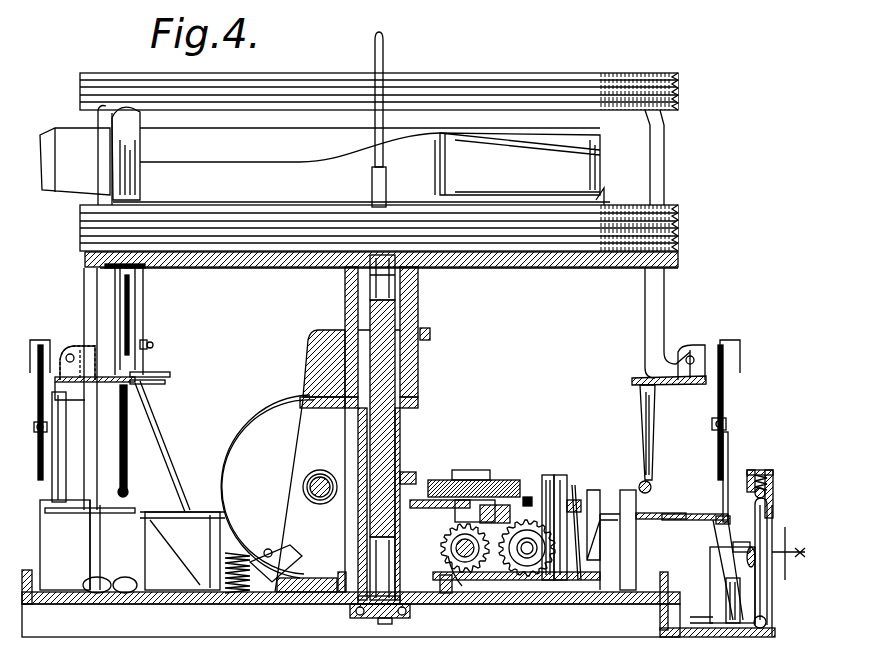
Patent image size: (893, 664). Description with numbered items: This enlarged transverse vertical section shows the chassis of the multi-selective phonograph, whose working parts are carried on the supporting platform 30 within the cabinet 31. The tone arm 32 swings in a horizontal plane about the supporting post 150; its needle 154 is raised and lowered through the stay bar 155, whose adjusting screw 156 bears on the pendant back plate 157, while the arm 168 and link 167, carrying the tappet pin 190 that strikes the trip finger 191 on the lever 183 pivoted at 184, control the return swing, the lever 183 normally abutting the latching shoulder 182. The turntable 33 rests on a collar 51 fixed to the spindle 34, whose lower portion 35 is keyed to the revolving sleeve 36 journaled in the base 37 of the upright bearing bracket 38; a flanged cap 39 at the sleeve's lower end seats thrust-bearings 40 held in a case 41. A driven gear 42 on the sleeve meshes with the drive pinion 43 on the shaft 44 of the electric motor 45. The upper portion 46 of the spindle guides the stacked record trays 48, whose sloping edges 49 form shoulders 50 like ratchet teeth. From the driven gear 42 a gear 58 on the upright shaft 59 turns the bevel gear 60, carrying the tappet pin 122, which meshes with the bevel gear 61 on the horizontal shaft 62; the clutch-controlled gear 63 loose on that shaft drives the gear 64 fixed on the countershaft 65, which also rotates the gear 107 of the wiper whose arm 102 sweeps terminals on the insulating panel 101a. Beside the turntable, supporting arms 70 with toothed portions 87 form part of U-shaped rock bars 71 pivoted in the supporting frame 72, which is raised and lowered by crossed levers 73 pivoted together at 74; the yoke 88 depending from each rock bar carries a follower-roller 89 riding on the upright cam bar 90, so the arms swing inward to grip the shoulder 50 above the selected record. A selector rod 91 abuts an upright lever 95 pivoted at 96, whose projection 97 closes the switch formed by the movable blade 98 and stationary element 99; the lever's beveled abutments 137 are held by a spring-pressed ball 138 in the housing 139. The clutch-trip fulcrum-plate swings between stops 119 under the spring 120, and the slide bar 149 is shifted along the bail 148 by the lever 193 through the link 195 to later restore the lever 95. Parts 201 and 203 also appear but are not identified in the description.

The supporting platform 30 is at (660, 606).
The cabinet 31 is at (351, 603).
The tone arm 32 is at (325, 165).
The turntable 33 is at (242, 266).
The upright spindle 34 is at (398, 266).
The lower portion of spindle 35 is at (398, 360).
The revolving sleeve 36 is at (418, 320).
The base of bearing bracket 37 is at (341, 576).
The upright bearing bracket 38 is at (305, 443).
The flanged cap 39 is at (412, 615).
The thrust-bearings 40 is at (350, 613).
The case 41 is at (386, 626).
The driven gear 42 is at (408, 472).
The drive pinion 43 is at (305, 490).
The motor shaft 44 is at (318, 497).
The electric motor 45 is at (268, 425).
The upper portion of spindle 46 is at (388, 186).
The record trays 48 is at (522, 82).
The sloping peripheral edges 49 is at (82, 213).
The shoulders 50 is at (85, 248).
The collar 51 is at (345, 288).
The gear 58 is at (474, 448).
The upright shaft 59 is at (476, 480).
The bevel gear 60 is at (462, 470).
The bevel gear 61 is at (470, 556).
The horizontal shaft 62 is at (452, 552).
The clutch-controlled gear 63 is at (488, 508).
The gear 64 is at (530, 556).
The countershaft 65 is at (552, 588).
The supporting arms 70 is at (98, 156).
The rock bar 71 is at (632, 381).
The supporting frame 72 is at (62, 348).
The crossed levers 73 is at (37, 395).
The pivot 74 is at (36, 432).
The toothed record-engaging portions 87 is at (134, 112).
The actuating yoke 88 is at (640, 424).
The follower-roller 89 is at (641, 482).
The cam bar 90 is at (120, 508).
The selector rods 91 is at (791, 553).
The selector lever 95 is at (768, 520).
The pivot 96 is at (767, 622).
The projection 97 is at (736, 522).
The movable switch blade 98 is at (733, 546).
The stationary switch element 99 is at (728, 580).
The insulating panel 101a is at (573, 497).
The wiper arm 102 is at (585, 492).
The gear 107 is at (526, 496).
The stops 119 is at (448, 594).
The spring 120 is at (462, 577).
The tappet pin 122 is at (447, 500).
The beveled abutments 137 is at (773, 502).
The spring-pressed ball 138 is at (766, 490).
The ball housing 139 is at (764, 470).
The bail 148 is at (728, 505).
The slide bar 149 is at (712, 571).
The tone arm post 150 is at (98, 566).
The reproducing needle 154 is at (600, 198).
The stay bar 155 is at (145, 288).
The adjusting screw 156 is at (153, 345).
The pendant back plate 157 is at (132, 314).
The link 167 is at (78, 447).
The arm 168 is at (75, 447).
The latching shoulder 182 is at (168, 373).
The horizontally-swinging lever 183 is at (168, 446).
The pivot 184 is at (218, 534).
The tappet pin 190 is at (65, 545).
The trip finger 191 is at (104, 545).
The selector lever 193 is at (634, 522).
The link 195 is at (690, 514).
The bracket 201 is at (598, 523).
The cam 203 is at (755, 567).